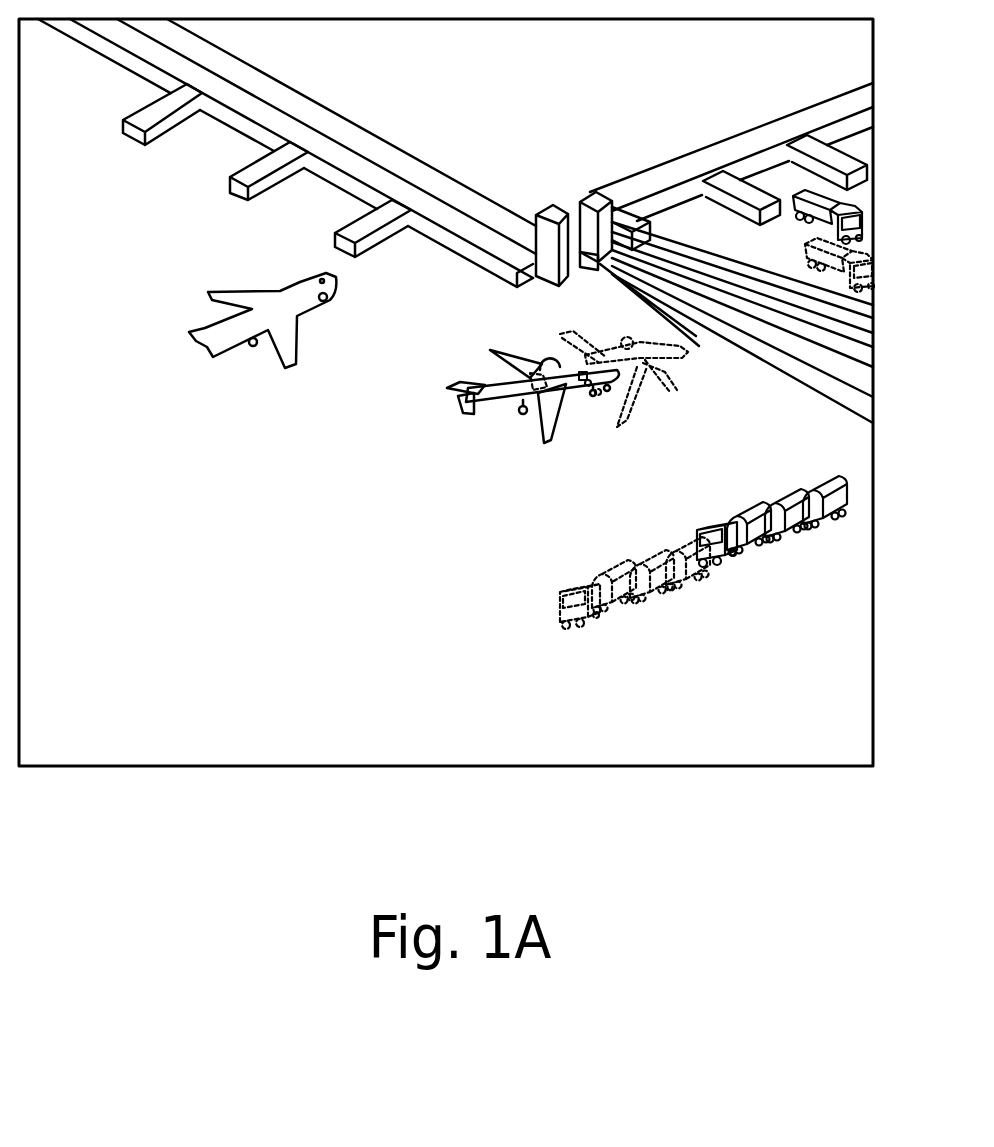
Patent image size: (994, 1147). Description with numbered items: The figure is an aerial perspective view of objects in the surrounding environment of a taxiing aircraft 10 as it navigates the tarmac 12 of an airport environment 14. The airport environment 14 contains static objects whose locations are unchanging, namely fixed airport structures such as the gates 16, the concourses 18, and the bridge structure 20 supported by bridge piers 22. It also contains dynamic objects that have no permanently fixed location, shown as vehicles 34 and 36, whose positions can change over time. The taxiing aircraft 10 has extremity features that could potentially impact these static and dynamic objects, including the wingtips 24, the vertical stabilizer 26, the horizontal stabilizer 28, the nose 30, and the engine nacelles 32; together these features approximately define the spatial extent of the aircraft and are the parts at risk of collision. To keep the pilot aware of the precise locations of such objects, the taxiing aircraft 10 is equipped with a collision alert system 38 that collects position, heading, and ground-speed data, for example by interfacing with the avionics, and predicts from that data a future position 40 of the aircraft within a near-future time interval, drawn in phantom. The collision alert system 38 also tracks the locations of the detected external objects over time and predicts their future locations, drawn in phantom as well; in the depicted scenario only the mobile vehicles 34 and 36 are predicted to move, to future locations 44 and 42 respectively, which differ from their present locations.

The taxiing aircraft 10 is at (496, 440).
The tarmac 12 is at (197, 530).
The airport environment 14 is at (657, 144).
The gates 16 is at (345, 250).
The concourses 18 is at (643, 187).
The bridge structure 20 is at (780, 360).
The bridge piers 22 is at (661, 312).
The wingtips 24 is at (471, 414).
The vertical stabilizer 26 is at (463, 386).
The horizontal stabilizer 28 is at (467, 413).
The nose 30 is at (609, 391).
The engine nacelles 32 is at (573, 403).
The vehicle 34 is at (719, 585).
The vehicle 36 is at (790, 183).
The collision alert system 38 is at (582, 368).
The future position 40 is at (677, 392).
The future location 42 is at (847, 278).
The future location 44 is at (561, 627).